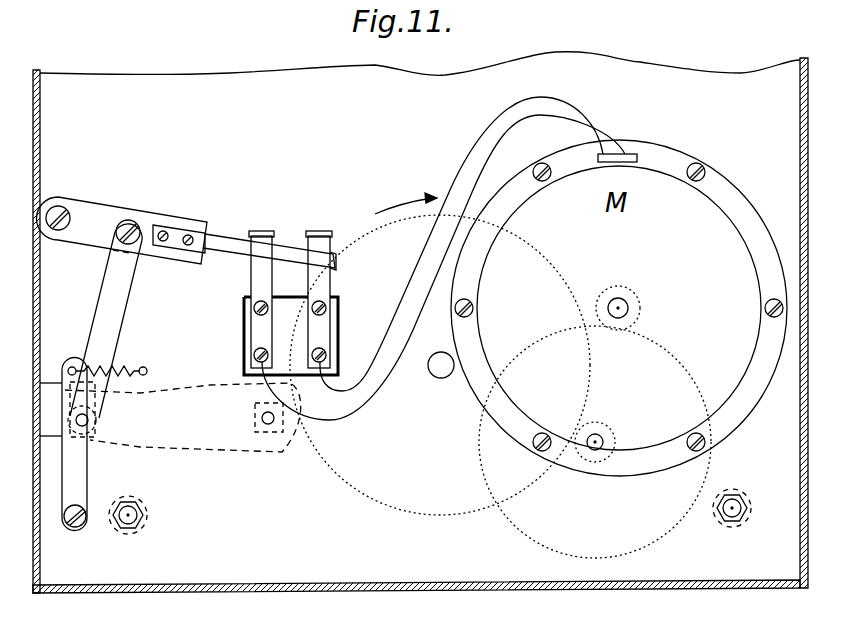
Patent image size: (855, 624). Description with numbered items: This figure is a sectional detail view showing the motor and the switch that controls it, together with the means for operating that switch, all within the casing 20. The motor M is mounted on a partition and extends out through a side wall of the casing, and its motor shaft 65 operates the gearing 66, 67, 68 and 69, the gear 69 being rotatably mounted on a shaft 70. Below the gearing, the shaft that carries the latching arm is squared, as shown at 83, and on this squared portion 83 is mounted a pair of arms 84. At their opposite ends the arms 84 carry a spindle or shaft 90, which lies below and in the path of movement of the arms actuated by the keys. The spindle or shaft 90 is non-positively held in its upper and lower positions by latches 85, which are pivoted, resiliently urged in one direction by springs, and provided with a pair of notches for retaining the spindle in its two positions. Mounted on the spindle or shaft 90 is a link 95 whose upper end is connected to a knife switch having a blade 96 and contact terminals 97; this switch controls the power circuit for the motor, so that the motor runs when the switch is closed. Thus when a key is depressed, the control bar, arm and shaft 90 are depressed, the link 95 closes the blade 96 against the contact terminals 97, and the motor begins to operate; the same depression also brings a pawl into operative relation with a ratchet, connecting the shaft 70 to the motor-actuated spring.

The casing 20 is at (323, 583).
The motor shaft 65 is at (628, 298).
The gearing 66 is at (642, 310).
The gearing 67 is at (693, 378).
The gearing 68 is at (612, 428).
The gear 69 is at (550, 265).
The shaft 70 is at (438, 375).
The squared portion of shaft 83 is at (255, 425).
The arms 84 is at (180, 392).
The latches 85 is at (78, 473).
The spindle or shaft 90 is at (89, 422).
The link 95 is at (124, 305).
The blade 96 is at (219, 239).
The contact terminals 97 is at (318, 232).